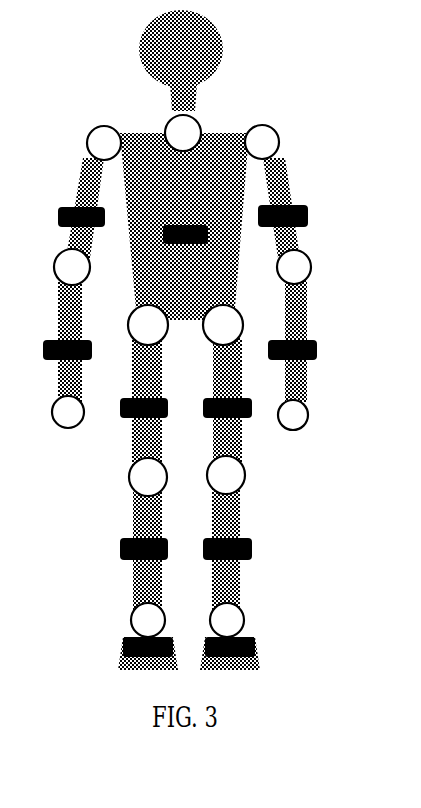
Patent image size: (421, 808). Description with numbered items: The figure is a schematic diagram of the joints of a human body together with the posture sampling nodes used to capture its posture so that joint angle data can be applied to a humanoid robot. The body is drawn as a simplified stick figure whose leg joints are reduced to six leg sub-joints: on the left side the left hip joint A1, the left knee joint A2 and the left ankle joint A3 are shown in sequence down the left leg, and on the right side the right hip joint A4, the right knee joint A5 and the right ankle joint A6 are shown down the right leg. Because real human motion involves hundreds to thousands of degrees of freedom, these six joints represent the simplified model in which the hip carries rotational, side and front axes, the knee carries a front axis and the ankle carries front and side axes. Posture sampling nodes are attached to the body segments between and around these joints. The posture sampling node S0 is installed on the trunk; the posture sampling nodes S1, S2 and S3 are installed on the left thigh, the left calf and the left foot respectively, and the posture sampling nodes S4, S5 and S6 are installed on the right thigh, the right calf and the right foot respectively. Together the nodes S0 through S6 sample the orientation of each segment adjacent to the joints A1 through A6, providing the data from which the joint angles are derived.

The posture sampling node S0 is at (193, 252).
The left hip joint A1 is at (131, 329).
The posture sampling node S1 is at (130, 424).
The left knee joint A2 is at (127, 480).
The posture sampling node S2 is at (129, 553).
The left ankle joint A3 is at (124, 620).
The posture sampling node S3 is at (131, 656).
The right hip joint A4 is at (238, 329).
The posture sampling node S4 is at (242, 424).
The right knee joint A5 is at (242, 479).
The posture sampling node S5 is at (246, 556).
The right ankle joint A6 is at (246, 620).
The posture sampling node S6 is at (247, 656).